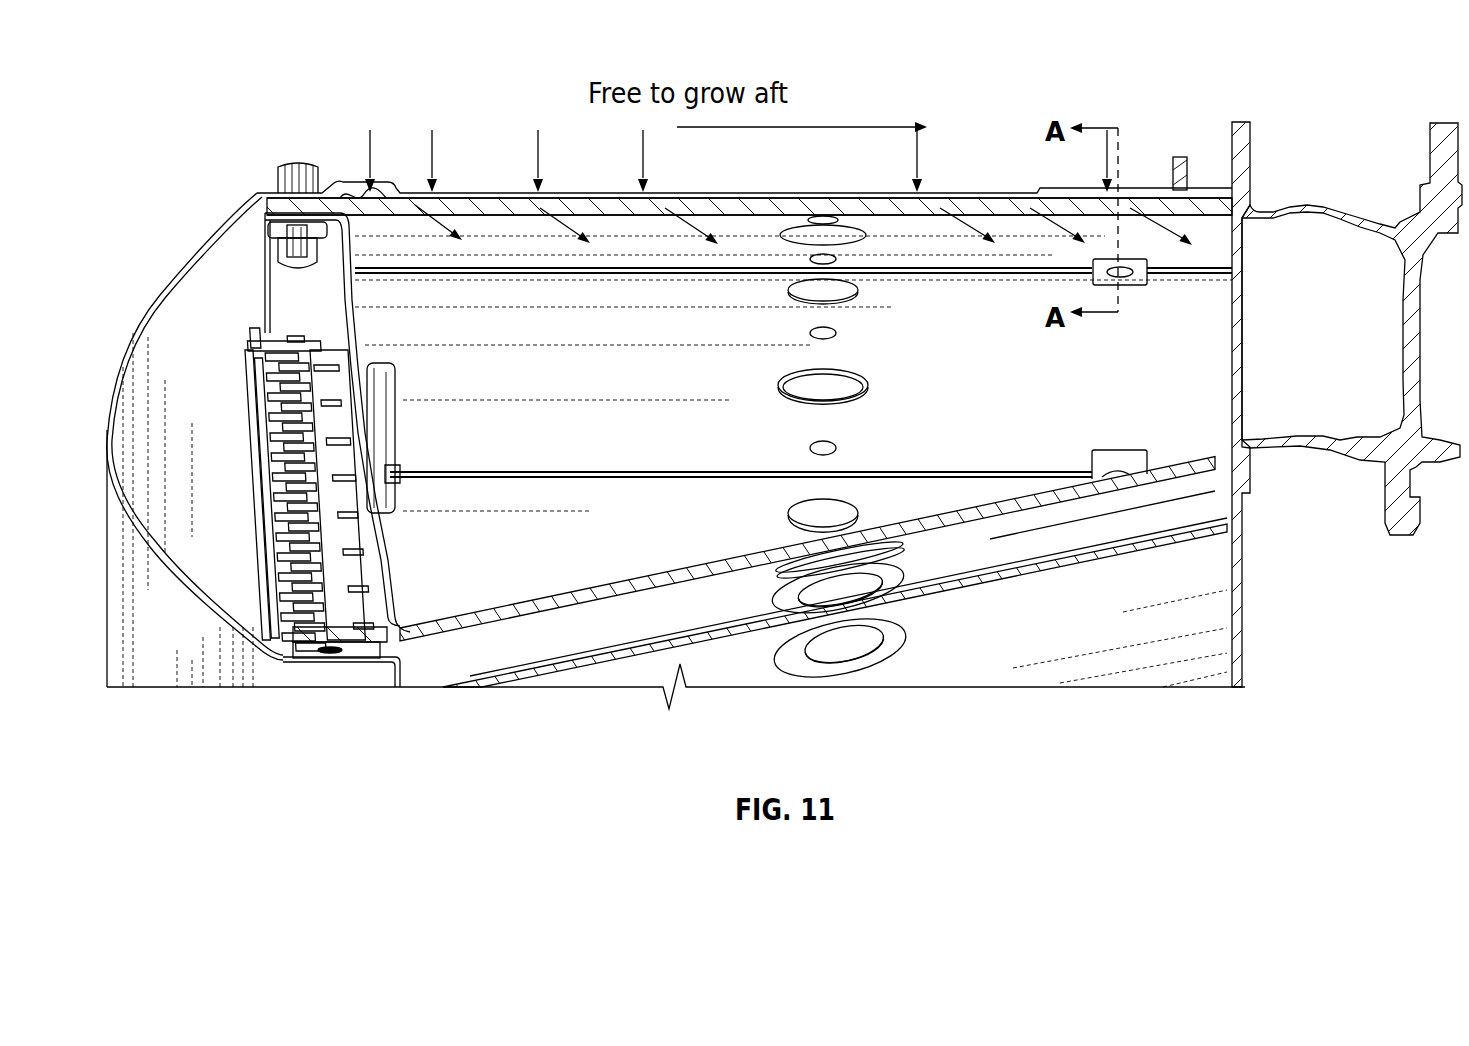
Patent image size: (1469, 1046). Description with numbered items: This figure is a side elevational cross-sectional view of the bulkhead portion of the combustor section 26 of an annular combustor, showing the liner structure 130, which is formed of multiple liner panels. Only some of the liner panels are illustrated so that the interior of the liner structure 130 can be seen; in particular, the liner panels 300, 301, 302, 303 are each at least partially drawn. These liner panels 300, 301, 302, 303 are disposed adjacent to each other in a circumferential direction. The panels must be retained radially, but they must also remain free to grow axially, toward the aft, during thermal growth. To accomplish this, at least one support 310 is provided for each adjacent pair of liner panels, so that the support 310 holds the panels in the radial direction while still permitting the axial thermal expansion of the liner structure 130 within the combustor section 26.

The combustor section 26 is at (425, 705).
The liner structure 130 is at (478, 180).
The liner panel 300 is at (1015, 232).
The liner panel 301 is at (1205, 297).
The liner panel 302 is at (1057, 618).
The liner panel 303 is at (683, 618).
The support 310 is at (1118, 258).